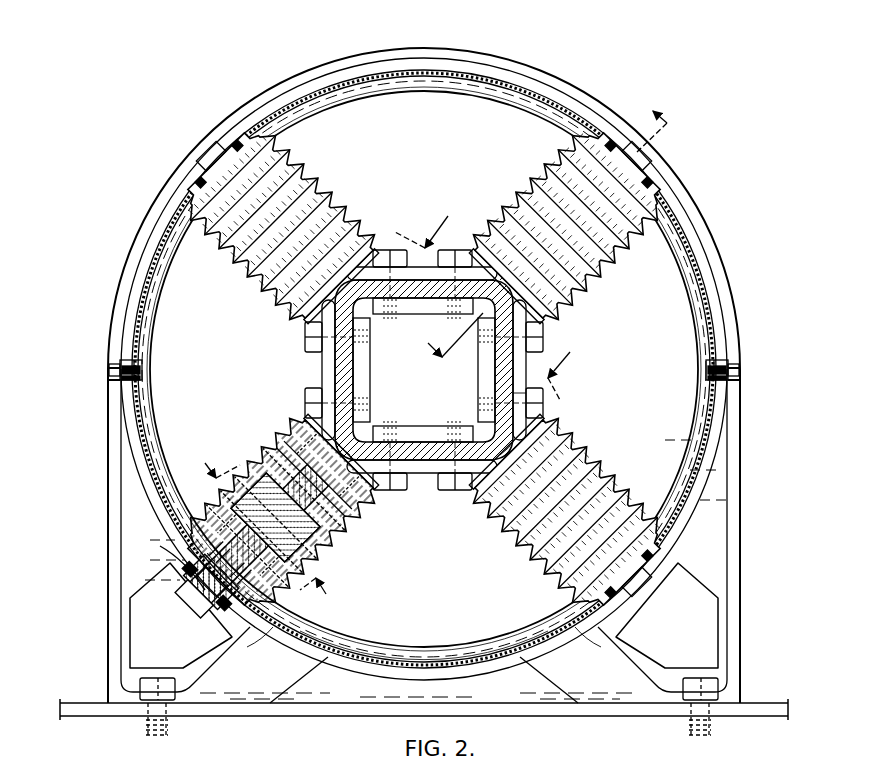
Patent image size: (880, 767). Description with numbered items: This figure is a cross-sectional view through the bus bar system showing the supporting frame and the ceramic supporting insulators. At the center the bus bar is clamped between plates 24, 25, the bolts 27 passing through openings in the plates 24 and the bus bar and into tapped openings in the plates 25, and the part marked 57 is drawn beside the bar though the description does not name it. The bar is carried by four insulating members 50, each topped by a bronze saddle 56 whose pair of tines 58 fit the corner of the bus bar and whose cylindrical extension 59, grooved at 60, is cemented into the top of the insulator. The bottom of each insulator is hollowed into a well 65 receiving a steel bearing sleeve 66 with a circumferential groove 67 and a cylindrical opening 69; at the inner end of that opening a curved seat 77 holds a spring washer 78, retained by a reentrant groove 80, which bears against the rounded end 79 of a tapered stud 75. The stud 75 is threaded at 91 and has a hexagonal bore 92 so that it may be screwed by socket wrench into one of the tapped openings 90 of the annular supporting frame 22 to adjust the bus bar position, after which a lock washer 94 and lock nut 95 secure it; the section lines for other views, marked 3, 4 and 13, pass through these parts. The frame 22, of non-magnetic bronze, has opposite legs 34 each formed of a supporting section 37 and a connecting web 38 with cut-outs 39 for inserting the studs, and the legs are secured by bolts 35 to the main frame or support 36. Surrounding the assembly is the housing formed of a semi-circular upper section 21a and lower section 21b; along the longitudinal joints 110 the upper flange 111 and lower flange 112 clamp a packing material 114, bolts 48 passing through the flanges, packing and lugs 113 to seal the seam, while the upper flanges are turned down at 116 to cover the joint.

The section line of FIG. 3 is at (539, 222).
The section line of FIG. 4 is at (489, 298).
The section line of FIG. 13 is at (264, 527).
The upper housing section 21a is at (441, 72).
The lower housing section 21b is at (505, 665).
The supporting frame 22 is at (530, 77).
The plates 24 is at (337, 356).
The plates 25 is at (415, 313).
The bolts 27 is at (408, 266).
The legs 34 is at (205, 690).
The bolts 35 is at (157, 678).
The main frame or support 36 is at (308, 708).
The supporting section 37 is at (108, 628).
The connecting web 38 is at (128, 562).
The cut-outs 39 is at (142, 635).
The bolts 48 is at (124, 361).
The insulating member 50 is at (318, 212).
The bronze saddle 56 is at (372, 262).
The washer 57 is at (530, 395).
The tines 58 is at (395, 273).
The cylindrical extension 59 is at (312, 332).
The circumferential groove 60 is at (300, 470).
The well 65 is at (258, 480).
The steel bearing sleeve 66 is at (270, 580).
The circumferential groove 67 is at (222, 510).
The cylindrical opening 69 is at (238, 520).
The tapered stud 75 is at (305, 556).
The curved seat 77 is at (322, 522).
The spring washer 78 is at (263, 472).
The rounded end 79 is at (275, 522).
The reentrant groove 80 is at (240, 512).
The tapped openings 90 is at (240, 596).
The threaded end 91 is at (244, 168).
The hexagonal bore 92 is at (212, 586).
The lock washer 94 is at (182, 548).
The lock nut 95 is at (222, 593).
The longitudinal joints 110 is at (143, 364).
The longitudinal flange 111 is at (112, 366).
The longitudinal flange 112 is at (141, 377).
The lug 113 is at (112, 381).
The packing material 114 is at (141, 369).
The turned-down portion 116 is at (112, 369).